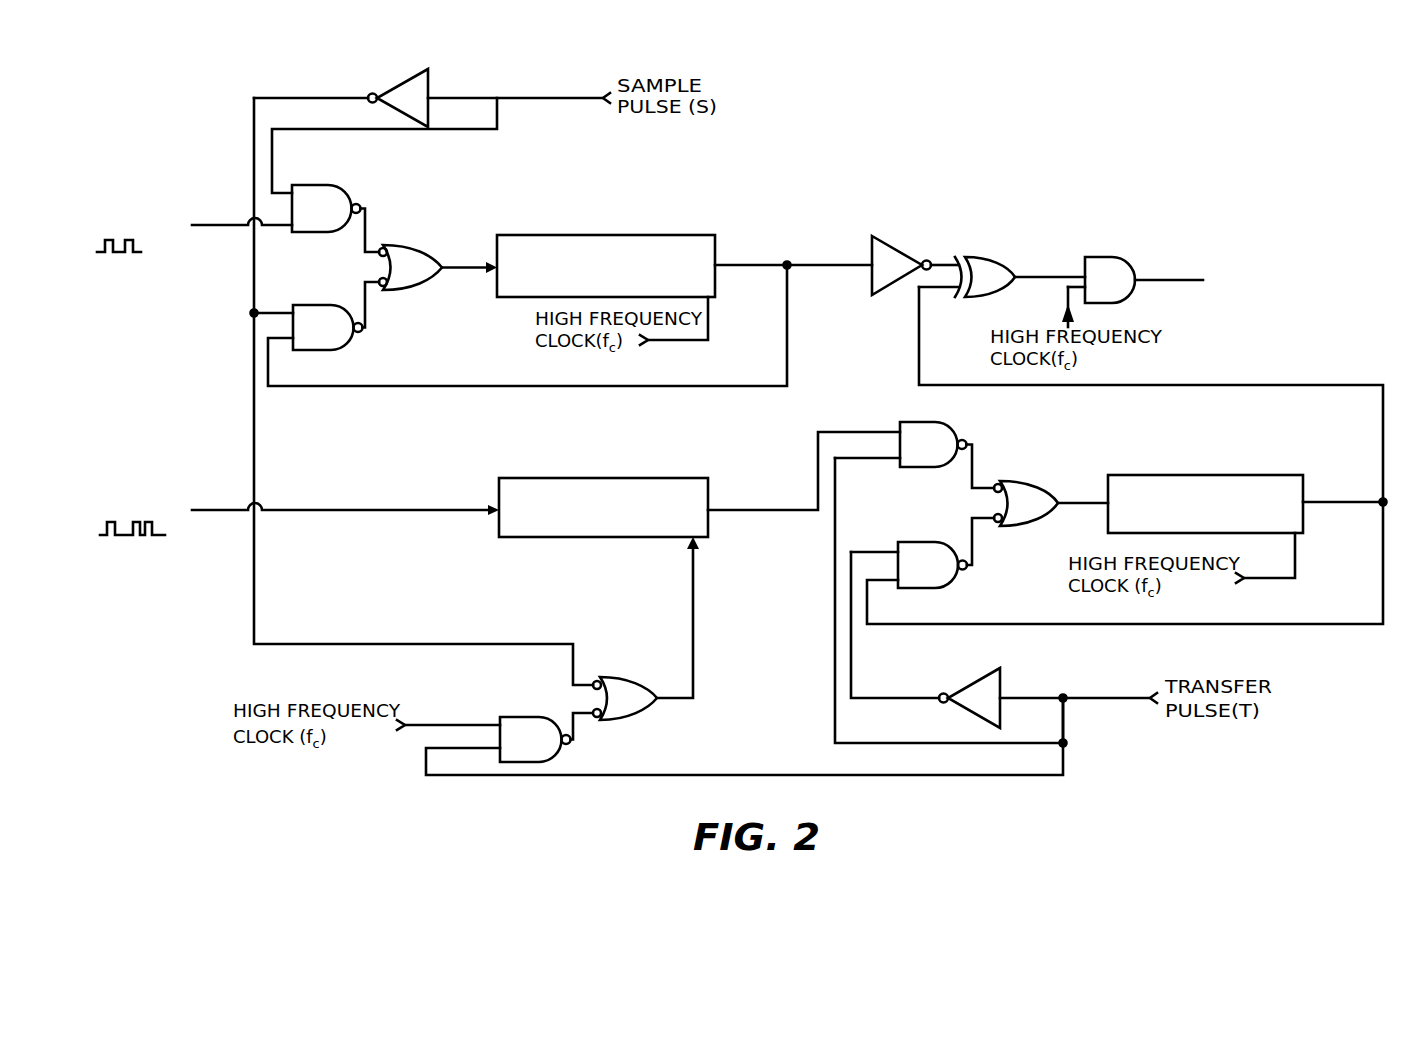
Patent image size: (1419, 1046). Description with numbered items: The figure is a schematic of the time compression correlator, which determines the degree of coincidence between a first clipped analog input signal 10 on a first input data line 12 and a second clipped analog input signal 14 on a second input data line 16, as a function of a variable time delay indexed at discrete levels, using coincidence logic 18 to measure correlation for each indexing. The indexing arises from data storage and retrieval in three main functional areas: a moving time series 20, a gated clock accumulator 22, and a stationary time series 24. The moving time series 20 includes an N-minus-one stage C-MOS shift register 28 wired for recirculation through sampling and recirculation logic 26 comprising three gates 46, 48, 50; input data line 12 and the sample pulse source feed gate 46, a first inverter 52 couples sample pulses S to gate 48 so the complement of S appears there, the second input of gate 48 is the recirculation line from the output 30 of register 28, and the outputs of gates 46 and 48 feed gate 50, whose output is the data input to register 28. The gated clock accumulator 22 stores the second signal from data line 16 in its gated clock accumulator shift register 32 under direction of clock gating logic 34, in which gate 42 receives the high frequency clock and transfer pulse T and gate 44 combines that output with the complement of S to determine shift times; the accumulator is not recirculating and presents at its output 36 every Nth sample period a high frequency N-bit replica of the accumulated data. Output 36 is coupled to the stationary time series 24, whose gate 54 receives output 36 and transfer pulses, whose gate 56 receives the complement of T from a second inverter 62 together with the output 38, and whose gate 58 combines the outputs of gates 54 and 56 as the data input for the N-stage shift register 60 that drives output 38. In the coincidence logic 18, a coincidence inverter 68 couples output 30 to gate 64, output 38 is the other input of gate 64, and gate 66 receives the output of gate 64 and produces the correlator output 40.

The first clipped analog input signal 10 is at (130, 205).
The first input data line 12 is at (242, 236).
The second clipped analog input signal 14 is at (130, 485).
The second input data line 16 is at (345, 521).
The coincidence logic 18 is at (1057, 248).
The moving time series 20 is at (412, 145).
The gated clock accumulator 22 is at (516, 617).
The stationary time series 24 is at (1120, 459).
The sampling and recirculation logic 26 is at (318, 277).
The N-1 stage shift register 28 is at (680, 288).
The output of register 28 30 is at (793, 255).
The gated clock accumulator shift register 32 is at (671, 527).
The clock gating logic 34 is at (488, 696).
The output of gated clock accumulator 36 is at (804, 471).
The output of stationary time series 38 is at (1343, 490).
The output of gate 66 40 is at (1235, 275).
The gate 42 is at (537, 750).
The gate 44 is at (640, 709).
The gate 46 is at (326, 220).
The gate 48 is at (332, 339).
The gate 50 is at (426, 279).
The first inverter 52 is at (425, 109).
The gate 54 is at (937, 454).
The gate 56 is at (935, 577).
The gate 58 is at (1042, 515).
The N-stage shift register 60 is at (1256, 526).
The second inverter 62 is at (993, 709).
The gate 64 is at (1004, 288).
The gate 66 is at (1122, 293).
The coincidence inverter 68 is at (906, 278).